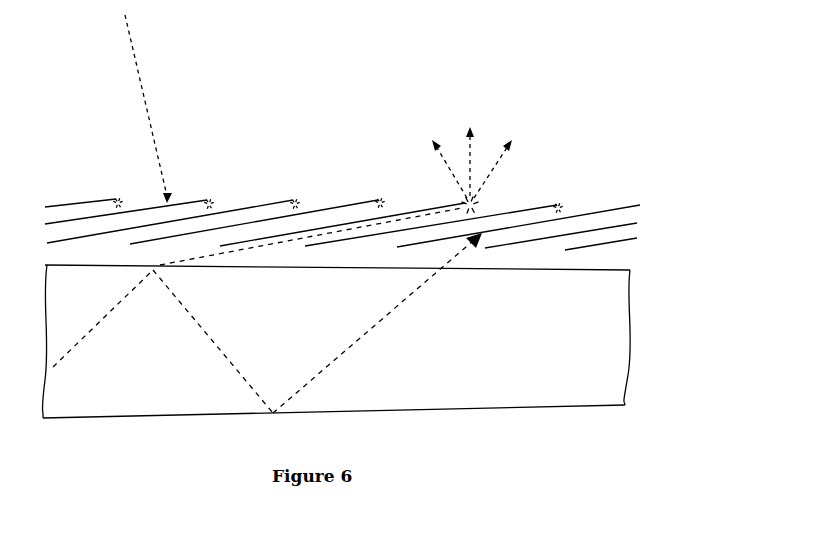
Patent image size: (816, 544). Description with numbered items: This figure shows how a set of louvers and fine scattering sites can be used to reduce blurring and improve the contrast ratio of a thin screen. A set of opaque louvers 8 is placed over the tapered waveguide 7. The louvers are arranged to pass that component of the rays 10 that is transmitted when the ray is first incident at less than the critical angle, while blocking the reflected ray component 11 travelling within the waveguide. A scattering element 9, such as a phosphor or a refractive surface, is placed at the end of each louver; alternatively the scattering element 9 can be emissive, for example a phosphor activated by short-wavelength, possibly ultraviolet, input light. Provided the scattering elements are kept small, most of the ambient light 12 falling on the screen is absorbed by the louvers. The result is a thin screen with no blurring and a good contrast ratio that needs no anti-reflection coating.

The tapered waveguide 7 is at (575, 412).
The opaque louvers 8 is at (628, 248).
The scattering element 9 is at (560, 198).
The rays 10 is at (255, 255).
The reflected ray component 11 is at (415, 298).
The ambient light 12 is at (140, 30).